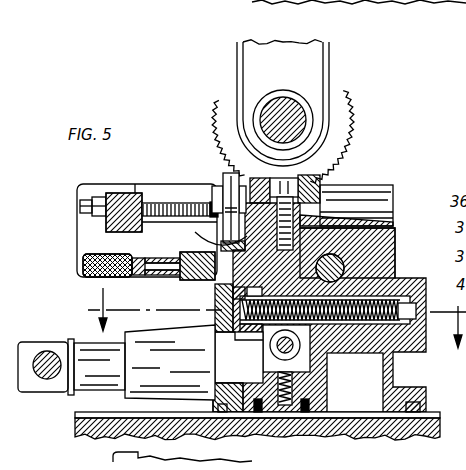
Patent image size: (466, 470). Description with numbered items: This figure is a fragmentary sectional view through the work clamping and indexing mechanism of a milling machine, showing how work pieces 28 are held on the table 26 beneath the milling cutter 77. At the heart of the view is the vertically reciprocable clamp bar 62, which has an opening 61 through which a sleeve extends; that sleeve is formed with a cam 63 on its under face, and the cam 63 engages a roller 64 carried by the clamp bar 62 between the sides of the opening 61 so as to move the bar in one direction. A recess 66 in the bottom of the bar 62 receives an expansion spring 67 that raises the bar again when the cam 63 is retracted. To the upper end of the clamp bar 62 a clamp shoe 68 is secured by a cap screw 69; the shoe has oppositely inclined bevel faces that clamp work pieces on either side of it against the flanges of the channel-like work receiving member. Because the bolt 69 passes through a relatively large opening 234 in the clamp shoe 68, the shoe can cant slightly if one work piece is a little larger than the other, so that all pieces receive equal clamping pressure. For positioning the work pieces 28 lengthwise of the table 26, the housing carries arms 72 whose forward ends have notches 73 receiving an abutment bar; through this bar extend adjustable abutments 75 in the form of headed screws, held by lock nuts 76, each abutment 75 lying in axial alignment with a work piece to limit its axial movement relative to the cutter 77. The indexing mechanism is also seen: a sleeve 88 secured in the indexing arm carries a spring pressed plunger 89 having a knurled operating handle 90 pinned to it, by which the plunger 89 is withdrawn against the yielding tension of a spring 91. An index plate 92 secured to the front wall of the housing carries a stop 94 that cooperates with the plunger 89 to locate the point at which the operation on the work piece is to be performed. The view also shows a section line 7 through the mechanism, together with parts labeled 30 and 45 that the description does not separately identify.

The section line 7- 7 is at (277, 309).
The table 26 is at (95, 427).
The work pieces 28 is at (372, 195).
The housing 30 is at (394, 274).
The shaft 45 is at (50, 379).
The opening 61 is at (300, 352).
The clamp bar 62 is at (391, 250).
The cam 63 is at (248, 356).
The roller 64 is at (290, 357).
The recess 66 is at (271, 414).
The expansion spring 67 is at (291, 414).
The clamp shoe 68 is at (234, 176).
The cap screw 69 is at (322, 153).
The arms 72 is at (153, 192).
The notches 73 is at (118, 193).
The adjustable abutments 75 is at (162, 217).
The lock nuts 76 is at (106, 224).
The milling cutter 77 is at (334, 121).
The sleeve 88 is at (216, 286).
The spring pressed plunger 89 is at (220, 300).
The knurled operating handle 90 is at (87, 278).
The spring 91 is at (179, 277).
The index plate 92 is at (222, 246).
The stop 94 is at (228, 316).
The opening 234 is at (300, 180).